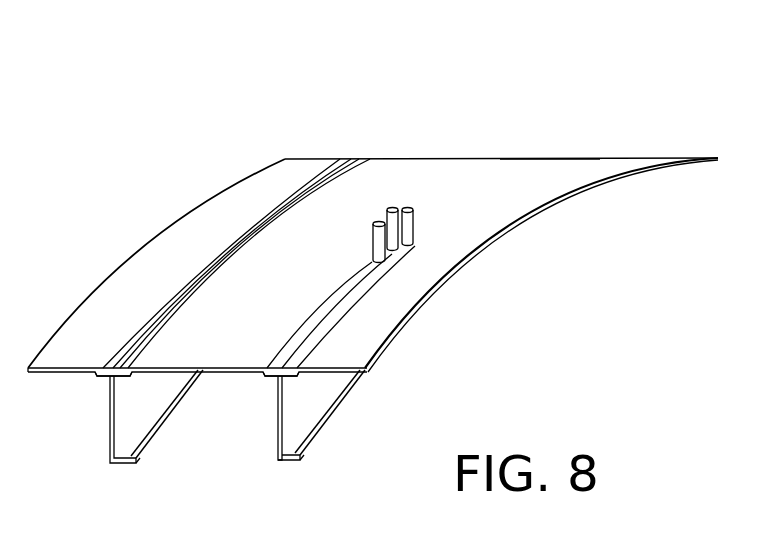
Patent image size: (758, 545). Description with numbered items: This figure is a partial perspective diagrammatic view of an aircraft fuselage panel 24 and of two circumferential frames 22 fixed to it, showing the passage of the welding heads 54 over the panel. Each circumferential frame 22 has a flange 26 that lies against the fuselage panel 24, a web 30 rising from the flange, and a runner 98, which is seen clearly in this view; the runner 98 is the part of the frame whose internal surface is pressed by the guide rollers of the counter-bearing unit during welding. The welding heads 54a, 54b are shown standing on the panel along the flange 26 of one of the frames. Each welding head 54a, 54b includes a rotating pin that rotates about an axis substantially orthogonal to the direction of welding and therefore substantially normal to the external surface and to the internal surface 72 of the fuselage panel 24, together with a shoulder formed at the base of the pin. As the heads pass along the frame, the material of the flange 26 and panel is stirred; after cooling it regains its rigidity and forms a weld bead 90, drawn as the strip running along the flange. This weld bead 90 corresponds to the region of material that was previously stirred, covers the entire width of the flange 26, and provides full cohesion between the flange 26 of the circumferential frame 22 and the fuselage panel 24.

The circumferential frame 22 is at (291, 452).
The fuselage panel 24 is at (373, 217).
The flange 26 is at (267, 375).
The web 30 is at (277, 420).
The welding heads 54 is at (478, 69).
The welding head 54a is at (392, 207).
The welding head 54b is at (378, 221).
The internal surface 72 is at (578, 194).
The weld bead 90 is at (372, 288).
The runner 98 is at (280, 462).